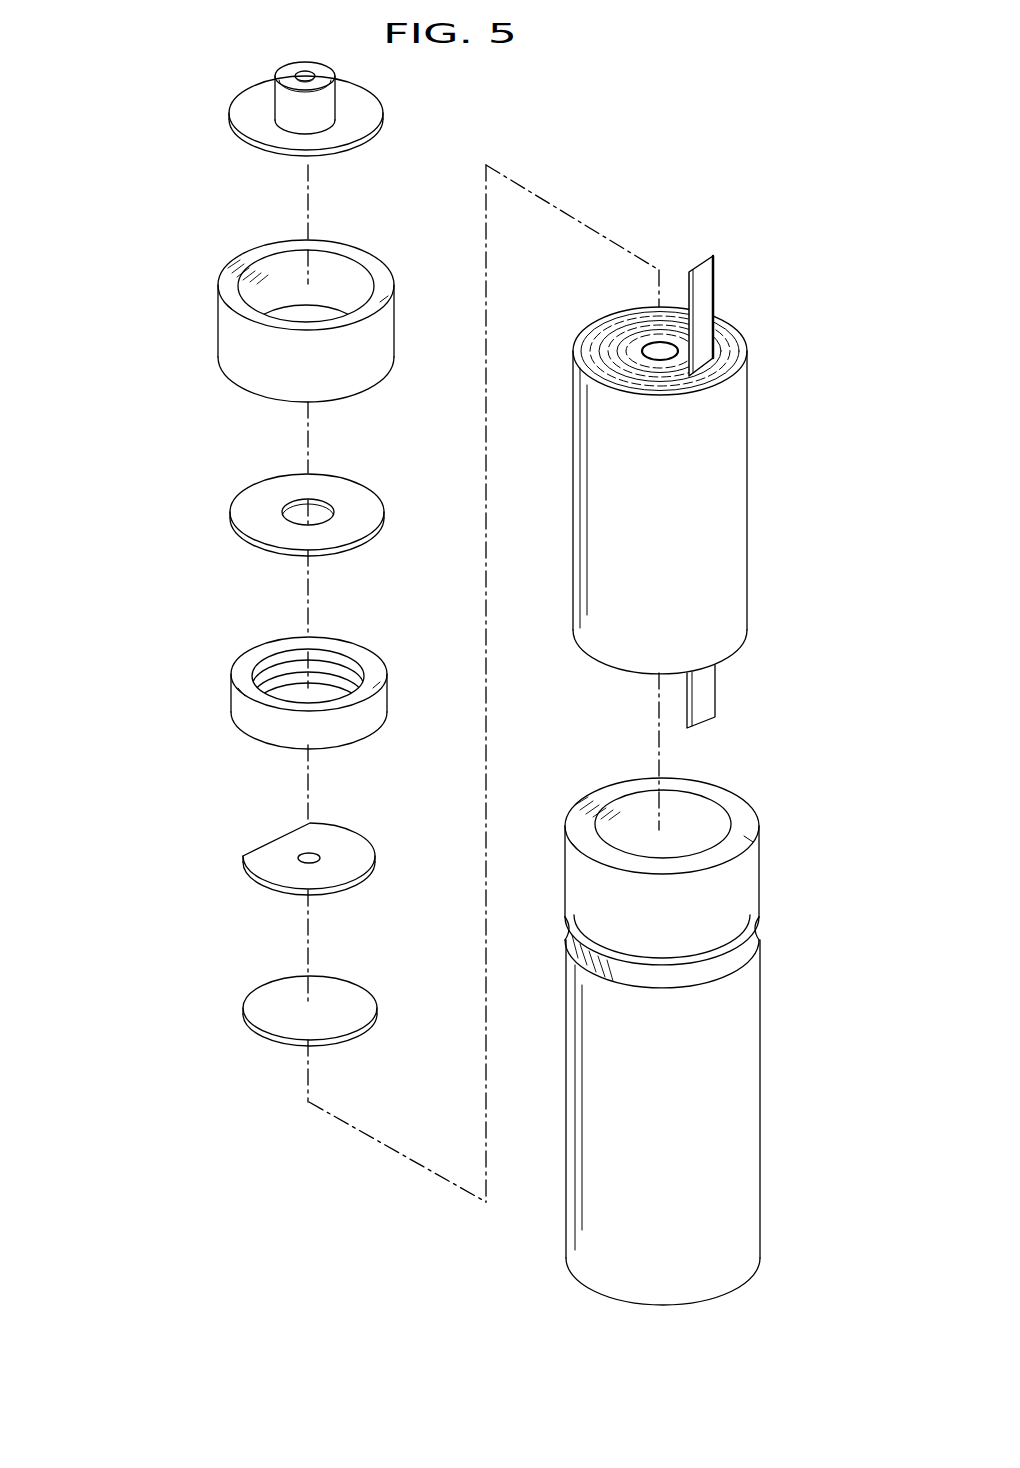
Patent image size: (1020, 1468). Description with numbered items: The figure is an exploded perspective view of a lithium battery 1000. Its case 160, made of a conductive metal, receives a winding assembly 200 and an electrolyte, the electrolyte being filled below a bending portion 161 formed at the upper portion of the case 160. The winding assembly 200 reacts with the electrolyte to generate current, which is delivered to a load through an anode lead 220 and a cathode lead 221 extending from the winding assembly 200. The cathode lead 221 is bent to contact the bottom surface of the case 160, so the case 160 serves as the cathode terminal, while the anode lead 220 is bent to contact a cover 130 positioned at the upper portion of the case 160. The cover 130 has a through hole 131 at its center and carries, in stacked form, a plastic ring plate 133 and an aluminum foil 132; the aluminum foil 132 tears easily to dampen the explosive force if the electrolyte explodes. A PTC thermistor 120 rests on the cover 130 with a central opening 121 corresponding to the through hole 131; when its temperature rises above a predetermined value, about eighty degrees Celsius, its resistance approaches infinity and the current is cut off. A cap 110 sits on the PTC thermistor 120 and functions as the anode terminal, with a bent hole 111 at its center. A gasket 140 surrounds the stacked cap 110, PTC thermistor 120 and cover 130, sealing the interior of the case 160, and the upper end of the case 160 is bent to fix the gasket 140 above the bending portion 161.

The lithium battery 1000 is at (155, 251).
The cap 110 is at (229, 114).
The bent hole 111 is at (298, 76).
The gasket 140 is at (218, 324).
The PTC thermistor 120 is at (232, 518).
The opening 121 is at (300, 515).
The cover 130 is at (231, 697).
The through hole 131 is at (300, 692).
The aluminum foil 132 is at (243, 860).
The ring plate 133 is at (243, 1012).
The winding assembly 200 is at (766, 456).
The anode lead 220 is at (715, 293).
The cathode lead 221 is at (718, 688).
The case 160 is at (710, 1160).
The bending portion 161 is at (700, 958).